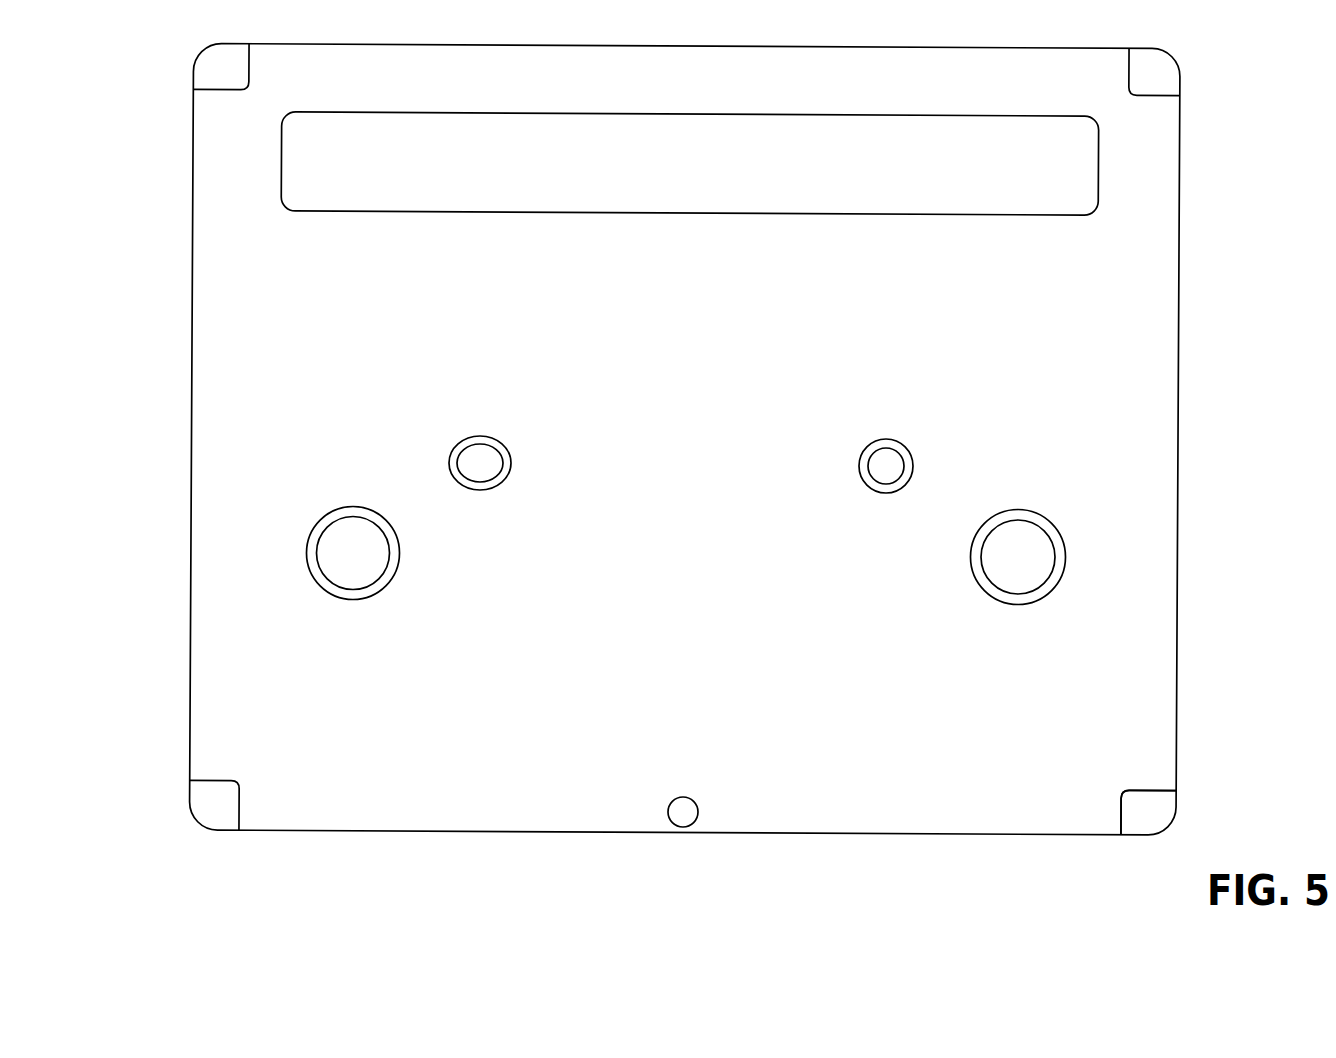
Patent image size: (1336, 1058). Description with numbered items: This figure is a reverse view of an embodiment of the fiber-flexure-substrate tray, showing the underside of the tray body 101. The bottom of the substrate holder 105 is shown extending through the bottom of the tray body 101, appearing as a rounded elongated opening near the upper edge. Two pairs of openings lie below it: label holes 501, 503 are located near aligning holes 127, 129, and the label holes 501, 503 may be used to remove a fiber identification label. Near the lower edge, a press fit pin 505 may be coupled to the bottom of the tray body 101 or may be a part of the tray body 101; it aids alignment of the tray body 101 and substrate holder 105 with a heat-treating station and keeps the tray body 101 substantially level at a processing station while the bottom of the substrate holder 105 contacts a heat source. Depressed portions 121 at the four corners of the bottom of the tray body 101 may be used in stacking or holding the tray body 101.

The tray body 101 is at (1150, 330).
The substrate holder 105 is at (1069, 189).
The depressed portions 121 is at (1160, 812).
The aligning hole 127 is at (467, 463).
The aligning hole 129 is at (895, 467).
The label hole 501 is at (1053, 567).
The label hole 503 is at (333, 553).
The press fit pin 505 is at (683, 813).